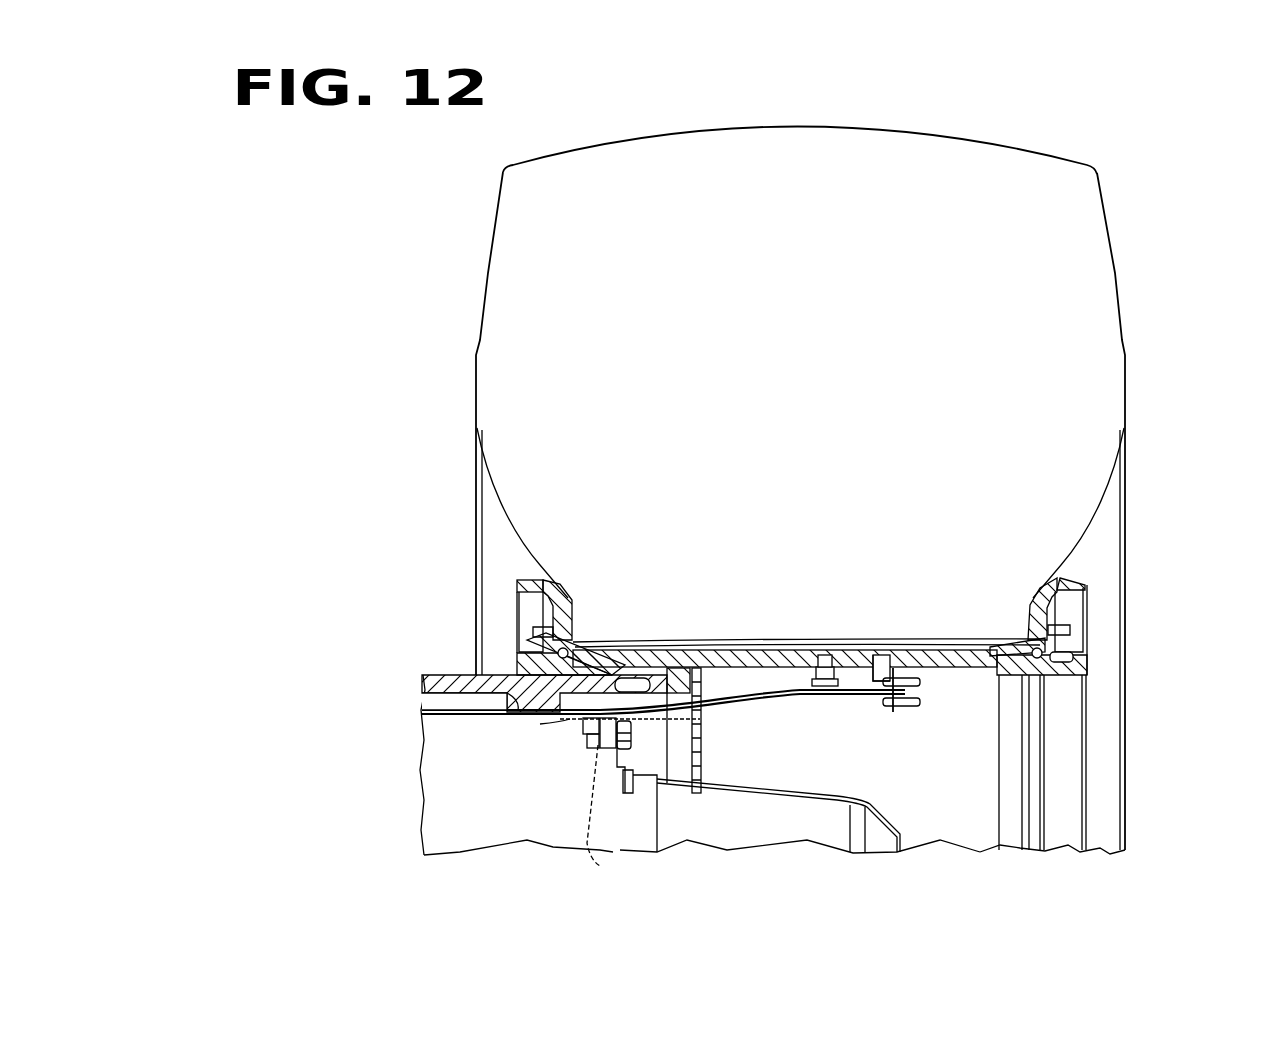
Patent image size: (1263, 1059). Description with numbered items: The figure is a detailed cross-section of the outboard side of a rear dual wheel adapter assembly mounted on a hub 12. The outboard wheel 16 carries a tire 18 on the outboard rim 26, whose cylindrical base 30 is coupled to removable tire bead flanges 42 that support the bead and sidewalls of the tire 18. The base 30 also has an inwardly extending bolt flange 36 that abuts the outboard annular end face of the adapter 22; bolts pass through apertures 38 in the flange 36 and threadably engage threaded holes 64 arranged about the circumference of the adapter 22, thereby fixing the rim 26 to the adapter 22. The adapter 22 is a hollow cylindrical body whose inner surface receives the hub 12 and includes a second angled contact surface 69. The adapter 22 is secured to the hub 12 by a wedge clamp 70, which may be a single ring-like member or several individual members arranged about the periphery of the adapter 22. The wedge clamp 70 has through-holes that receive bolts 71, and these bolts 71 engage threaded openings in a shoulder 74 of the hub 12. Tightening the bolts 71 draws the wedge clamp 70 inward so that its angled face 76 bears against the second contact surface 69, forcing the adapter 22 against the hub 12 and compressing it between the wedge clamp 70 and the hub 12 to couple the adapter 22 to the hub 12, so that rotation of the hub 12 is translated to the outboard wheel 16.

The hub 12 is at (660, 815).
The outboard wheel 16 is at (1130, 130).
The tire 18 is at (950, 135).
The adapter 22 is at (420, 662).
The outboard rim 26 is at (1150, 630).
The cylindrical base 30 is at (748, 650).
The inwardly extending flange 36 is at (693, 674).
The apertures 38 is at (745, 703).
The tire bead flanges 42 is at (516, 584).
The threaded holes 64 is at (660, 713).
The second angled contact surface 69 is at (545, 724).
The wedge clamp 70 is at (650, 694).
The bolts 71 is at (610, 800).
The shoulder 74 is at (565, 750).
The angled face 76 is at (535, 708).